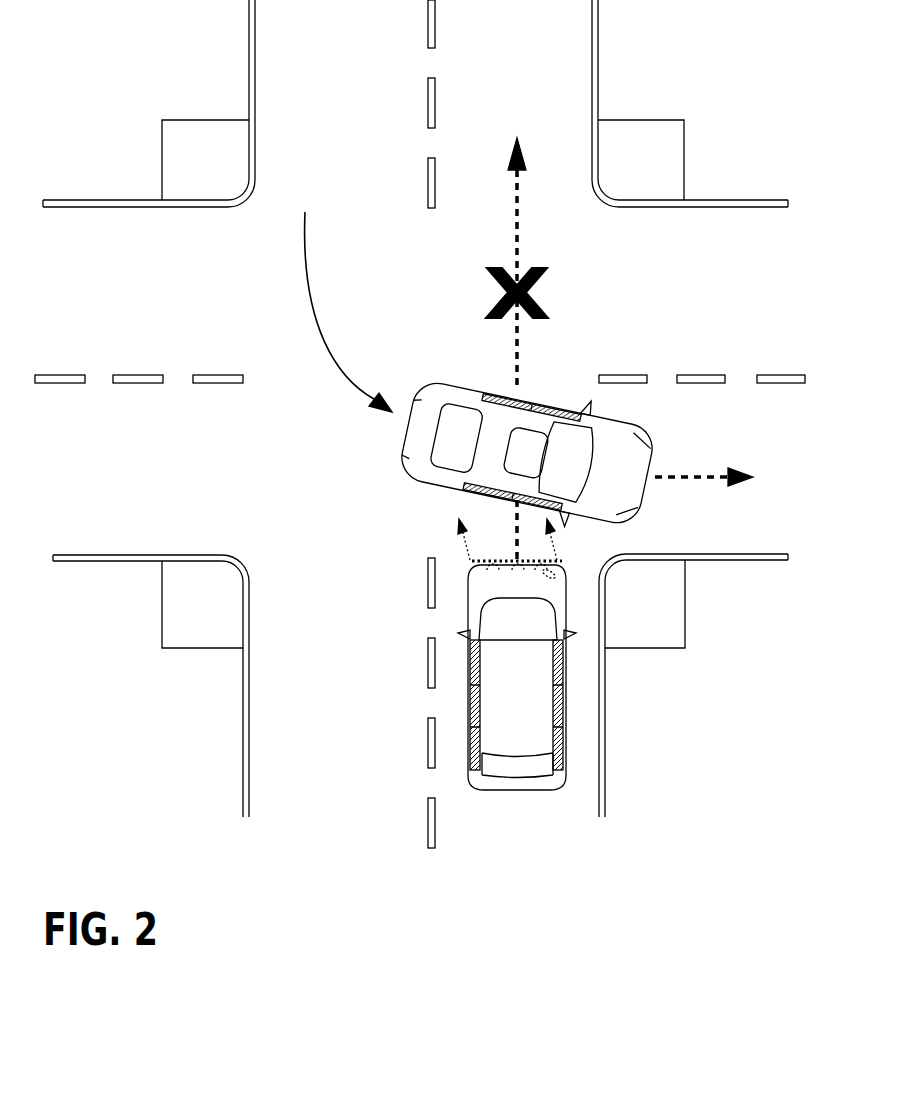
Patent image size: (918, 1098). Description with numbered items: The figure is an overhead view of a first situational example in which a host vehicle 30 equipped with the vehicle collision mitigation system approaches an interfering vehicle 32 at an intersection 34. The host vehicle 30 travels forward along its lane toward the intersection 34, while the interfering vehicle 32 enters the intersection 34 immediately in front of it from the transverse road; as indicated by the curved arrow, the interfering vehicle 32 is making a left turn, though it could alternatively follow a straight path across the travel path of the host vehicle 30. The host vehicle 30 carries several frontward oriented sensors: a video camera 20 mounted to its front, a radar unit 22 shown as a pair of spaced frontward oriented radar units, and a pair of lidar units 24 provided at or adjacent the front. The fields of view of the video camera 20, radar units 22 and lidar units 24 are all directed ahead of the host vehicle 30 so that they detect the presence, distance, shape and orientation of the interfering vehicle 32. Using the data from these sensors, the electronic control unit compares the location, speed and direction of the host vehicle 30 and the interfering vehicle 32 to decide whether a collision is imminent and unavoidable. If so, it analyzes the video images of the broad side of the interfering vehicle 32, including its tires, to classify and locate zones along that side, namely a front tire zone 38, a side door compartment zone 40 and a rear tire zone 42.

The video camera 20 is at (548, 561).
The radar unit 22 is at (487, 572).
The lidar units 24 is at (490, 562).
The host vehicle 30 is at (468, 700).
The interfering vehicle 32 is at (520, 435).
The intersection 34 is at (670, 257).
The front tire zone 38 is at (512, 497).
The side door compartment zone 40 is at (531, 408).
The rear tire zone 42 is at (442, 434).